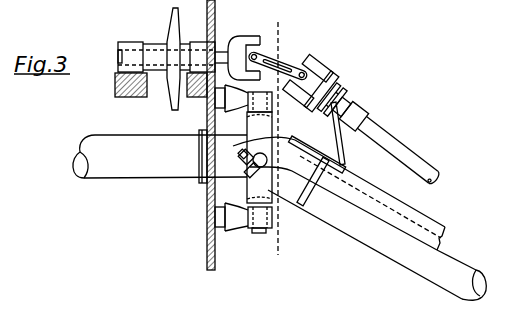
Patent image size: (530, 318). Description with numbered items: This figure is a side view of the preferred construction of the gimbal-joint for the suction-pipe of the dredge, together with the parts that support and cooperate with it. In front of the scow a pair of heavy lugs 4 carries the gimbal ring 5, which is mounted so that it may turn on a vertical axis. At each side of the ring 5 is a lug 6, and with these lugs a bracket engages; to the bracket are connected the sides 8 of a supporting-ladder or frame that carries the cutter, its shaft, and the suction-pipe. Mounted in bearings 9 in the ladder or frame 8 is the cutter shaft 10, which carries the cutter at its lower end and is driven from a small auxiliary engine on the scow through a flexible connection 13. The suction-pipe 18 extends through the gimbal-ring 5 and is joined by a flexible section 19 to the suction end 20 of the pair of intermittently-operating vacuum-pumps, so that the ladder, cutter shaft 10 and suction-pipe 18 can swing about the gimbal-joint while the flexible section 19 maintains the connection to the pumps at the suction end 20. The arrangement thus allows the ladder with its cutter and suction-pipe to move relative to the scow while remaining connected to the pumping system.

The lugs 4 is at (288, 22).
The ring 5 is at (259, 157).
The lug 6 is at (248, 151).
The sides of supporting-ladder 8 is at (410, 215).
The bearings 9 is at (338, 145).
The shaft 10 is at (386, 131).
The flexible connection 13 is at (284, 49).
The suction-pipe 18 is at (444, 278).
The flexible section 19 is at (242, 162).
The suction end 20 is at (160, 156).